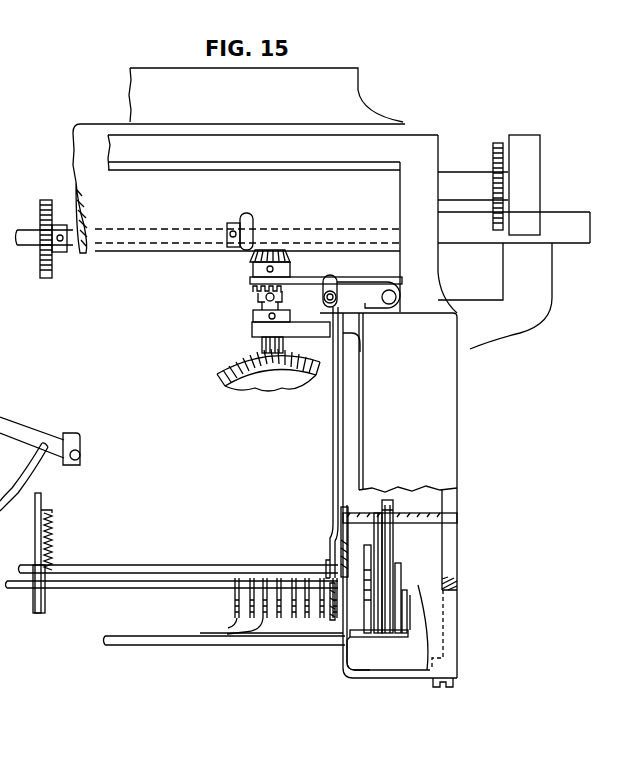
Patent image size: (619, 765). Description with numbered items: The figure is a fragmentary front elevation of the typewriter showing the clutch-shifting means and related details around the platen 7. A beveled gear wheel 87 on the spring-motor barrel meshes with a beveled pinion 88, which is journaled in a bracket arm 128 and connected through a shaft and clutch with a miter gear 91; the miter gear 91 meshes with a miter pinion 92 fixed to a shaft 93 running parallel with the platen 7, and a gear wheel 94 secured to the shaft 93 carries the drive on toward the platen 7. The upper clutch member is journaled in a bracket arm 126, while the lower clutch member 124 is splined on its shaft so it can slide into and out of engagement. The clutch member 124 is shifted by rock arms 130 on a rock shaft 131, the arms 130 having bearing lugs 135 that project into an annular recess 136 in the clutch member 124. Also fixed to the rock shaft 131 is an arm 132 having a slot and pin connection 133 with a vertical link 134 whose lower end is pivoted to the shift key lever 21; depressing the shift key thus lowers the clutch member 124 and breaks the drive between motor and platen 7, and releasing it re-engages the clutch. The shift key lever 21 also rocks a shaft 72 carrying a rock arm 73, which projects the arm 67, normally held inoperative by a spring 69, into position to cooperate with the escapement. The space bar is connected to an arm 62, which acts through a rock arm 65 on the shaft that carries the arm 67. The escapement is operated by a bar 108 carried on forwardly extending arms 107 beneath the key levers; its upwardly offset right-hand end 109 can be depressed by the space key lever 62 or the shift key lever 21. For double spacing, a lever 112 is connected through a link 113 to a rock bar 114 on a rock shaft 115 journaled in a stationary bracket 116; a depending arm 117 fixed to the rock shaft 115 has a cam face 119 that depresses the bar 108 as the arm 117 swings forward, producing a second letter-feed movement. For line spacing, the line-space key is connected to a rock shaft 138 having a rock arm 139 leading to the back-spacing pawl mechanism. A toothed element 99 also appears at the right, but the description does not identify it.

The platen 7 is at (331, 208).
The rack bar 99 is at (497, 143).
The bracket arm 126 is at (291, 243).
The shaft 93 is at (30, 230).
The gear wheel 94 is at (53, 272).
The miter pinion 92 is at (251, 218).
The miter gear 91 is at (252, 260).
The rock arms 130 is at (301, 289).
The slot and pin connection 133 is at (330, 279).
The arm 132 is at (356, 283).
The rock shaft 131 is at (398, 298).
The bearing lugs 135 is at (256, 290).
The annular recess 136 is at (262, 299).
The lower clutch member 124 is at (258, 316).
The bracket arm 128 is at (290, 337).
The beveled pinion 88 is at (255, 358).
The beveled gear wheel 87 is at (218, 377).
The vertical link 134 is at (333, 408).
The shift key lever 21 is at (330, 538).
The rock bar 114 is at (397, 491).
The right-hand end 109 is at (360, 655).
The rock shaft 115 is at (409, 518).
The stationary bracket 116 is at (345, 507).
The depending arm 117 is at (393, 552).
The link 113 is at (378, 556).
The rock arm 65 is at (376, 575).
The forwardly extending arms 107 is at (404, 579).
The cam face 119 is at (395, 602).
The lever 112 is at (393, 624).
The arm 62 is at (376, 638).
The rock shaft 138 is at (19, 412).
The rock arm 139 is at (24, 477).
The arm 67 is at (35, 532).
The spring 69 is at (54, 538).
The rock arm 73 is at (35, 617).
The rock shaft 72 is at (162, 566).
The bar 108 is at (210, 650).